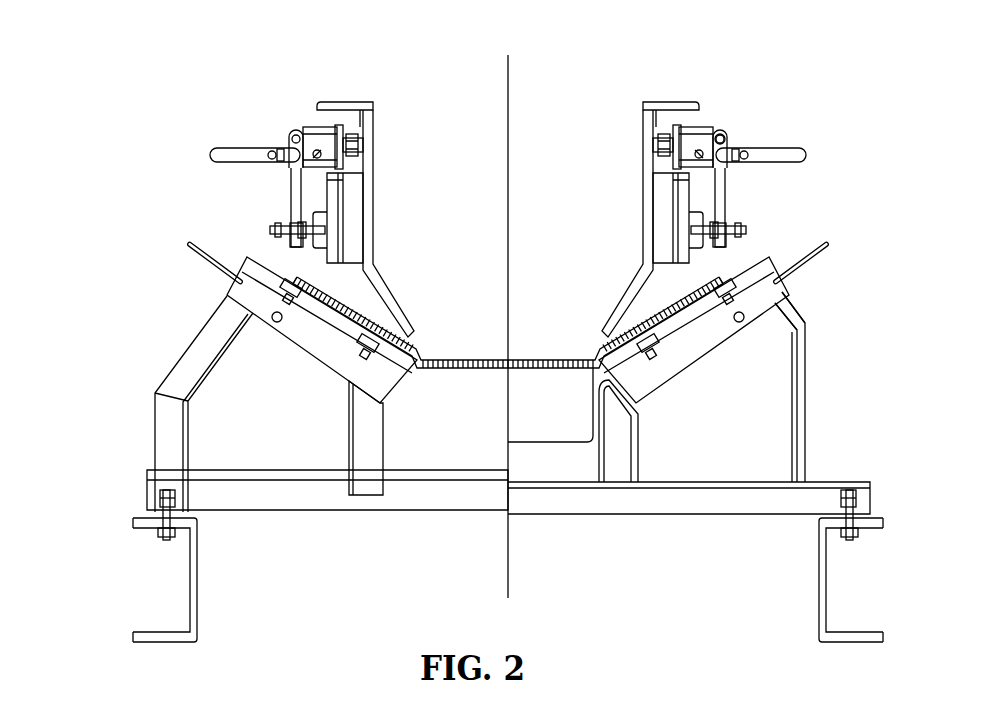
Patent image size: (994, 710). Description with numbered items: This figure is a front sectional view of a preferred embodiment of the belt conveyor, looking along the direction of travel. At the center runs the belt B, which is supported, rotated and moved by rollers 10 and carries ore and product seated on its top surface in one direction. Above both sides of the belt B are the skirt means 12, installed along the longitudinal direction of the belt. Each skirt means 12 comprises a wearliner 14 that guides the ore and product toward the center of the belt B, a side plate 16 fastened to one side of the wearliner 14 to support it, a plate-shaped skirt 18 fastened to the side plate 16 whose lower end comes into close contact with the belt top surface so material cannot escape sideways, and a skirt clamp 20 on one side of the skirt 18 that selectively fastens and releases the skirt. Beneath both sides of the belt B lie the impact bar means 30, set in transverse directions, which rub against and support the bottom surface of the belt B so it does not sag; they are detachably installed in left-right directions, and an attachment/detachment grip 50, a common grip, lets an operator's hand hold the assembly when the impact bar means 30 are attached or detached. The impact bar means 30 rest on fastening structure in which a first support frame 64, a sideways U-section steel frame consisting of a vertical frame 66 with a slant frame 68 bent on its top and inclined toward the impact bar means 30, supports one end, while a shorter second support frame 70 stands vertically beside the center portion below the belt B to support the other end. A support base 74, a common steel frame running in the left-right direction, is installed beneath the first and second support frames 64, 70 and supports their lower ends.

The roller 10 is at (543, 423).
The skirt means 12 is at (283, 127).
The wearliner 14 is at (371, 137).
The side plate 16 is at (667, 102).
The skirt 18 is at (675, 261).
The skirt clamp 20 is at (727, 145).
The impact bar means 30 is at (200, 227).
The attachment/detachment grip 50 is at (828, 244).
The first support frame 64 is at (163, 413).
The vertical frame 66 is at (800, 415).
The slant frame 68 is at (817, 349).
The second support frame 70 is at (370, 438).
The support base 74 is at (293, 485).
The belt B is at (488, 363).